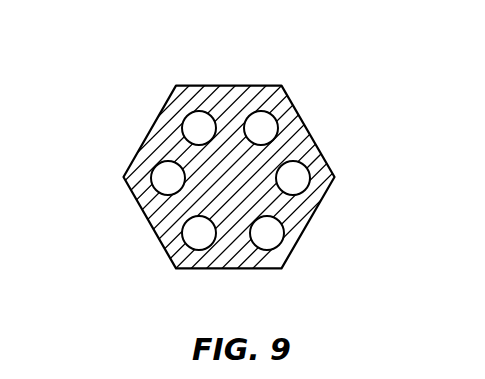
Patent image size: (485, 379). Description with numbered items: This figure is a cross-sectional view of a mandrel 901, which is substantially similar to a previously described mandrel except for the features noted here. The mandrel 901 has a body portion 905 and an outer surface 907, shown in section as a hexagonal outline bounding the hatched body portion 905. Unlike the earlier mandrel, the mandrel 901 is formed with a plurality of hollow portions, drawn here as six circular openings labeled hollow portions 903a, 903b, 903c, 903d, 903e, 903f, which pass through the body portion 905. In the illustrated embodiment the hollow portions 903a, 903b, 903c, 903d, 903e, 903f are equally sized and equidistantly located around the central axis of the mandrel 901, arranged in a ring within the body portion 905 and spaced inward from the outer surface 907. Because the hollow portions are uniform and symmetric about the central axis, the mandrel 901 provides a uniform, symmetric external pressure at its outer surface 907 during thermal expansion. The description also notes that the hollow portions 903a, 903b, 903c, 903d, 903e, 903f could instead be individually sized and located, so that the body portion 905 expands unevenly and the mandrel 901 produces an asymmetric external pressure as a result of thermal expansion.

The mandrel 901 is at (242, 189).
The hollow portion 903a is at (160, 180).
The hollow portion 903b is at (188, 129).
The hollow portion 903c is at (260, 128).
The hollow portion 903d is at (292, 180).
The hollow portion 903e is at (268, 236).
The hollow portion 903f is at (198, 244).
The body portion 905 is at (147, 155).
The outer surface 907 is at (327, 163).